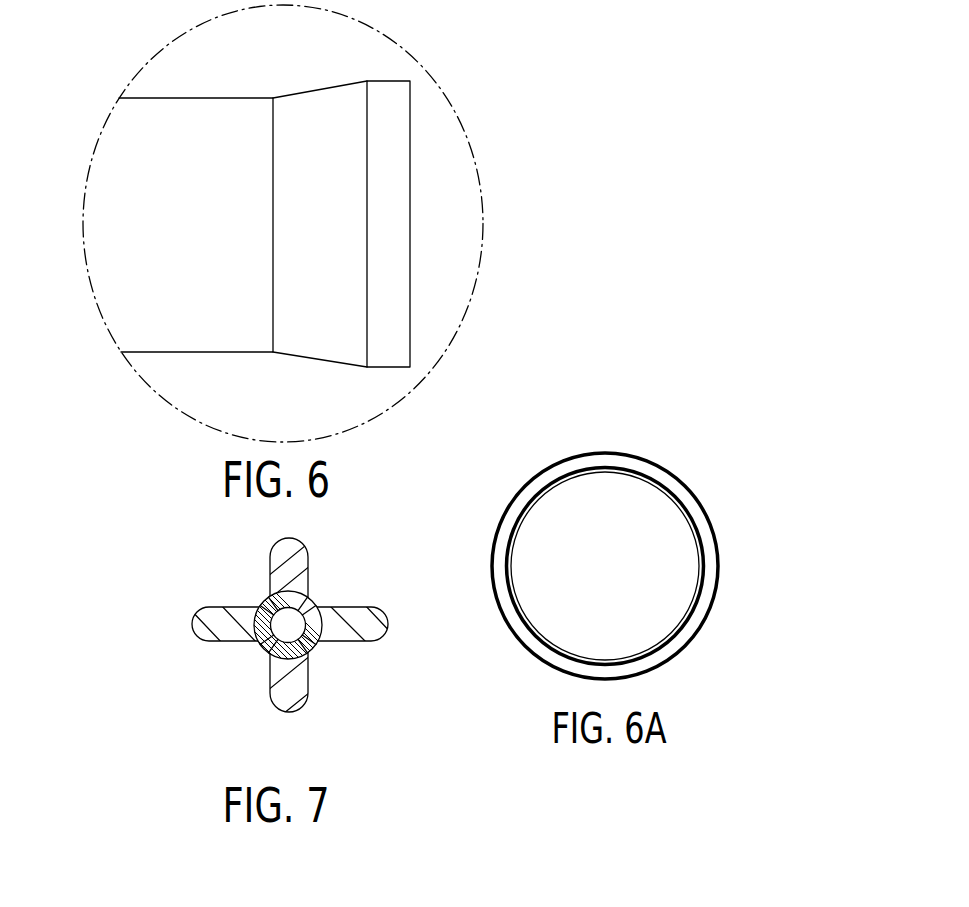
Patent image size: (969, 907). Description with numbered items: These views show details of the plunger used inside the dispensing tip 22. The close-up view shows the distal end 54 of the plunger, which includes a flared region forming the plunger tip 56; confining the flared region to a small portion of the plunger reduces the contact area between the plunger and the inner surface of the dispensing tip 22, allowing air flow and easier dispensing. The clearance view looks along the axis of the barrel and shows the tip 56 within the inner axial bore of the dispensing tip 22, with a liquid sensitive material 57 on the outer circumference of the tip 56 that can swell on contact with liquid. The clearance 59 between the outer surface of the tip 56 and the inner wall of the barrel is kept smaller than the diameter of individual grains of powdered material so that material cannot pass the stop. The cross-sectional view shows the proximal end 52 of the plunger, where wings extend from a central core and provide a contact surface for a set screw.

In FIG. 6A, the dispensing tip 22 is at (610, 450).
In FIG. 7, the proximal end of the plunger 52 is at (323, 640).
In FIG. 6, the distal end of the plunger 54 is at (90, 172).
In FIG. 6, the plunger tip 56 is at (397, 183).
In FIG. 6A, the plunger tip 56 is at (613, 582).
In FIG. 6A, the liquid sensitive material 57 is at (537, 480).
In FIG. 6A, the clearance 59 is at (503, 538).